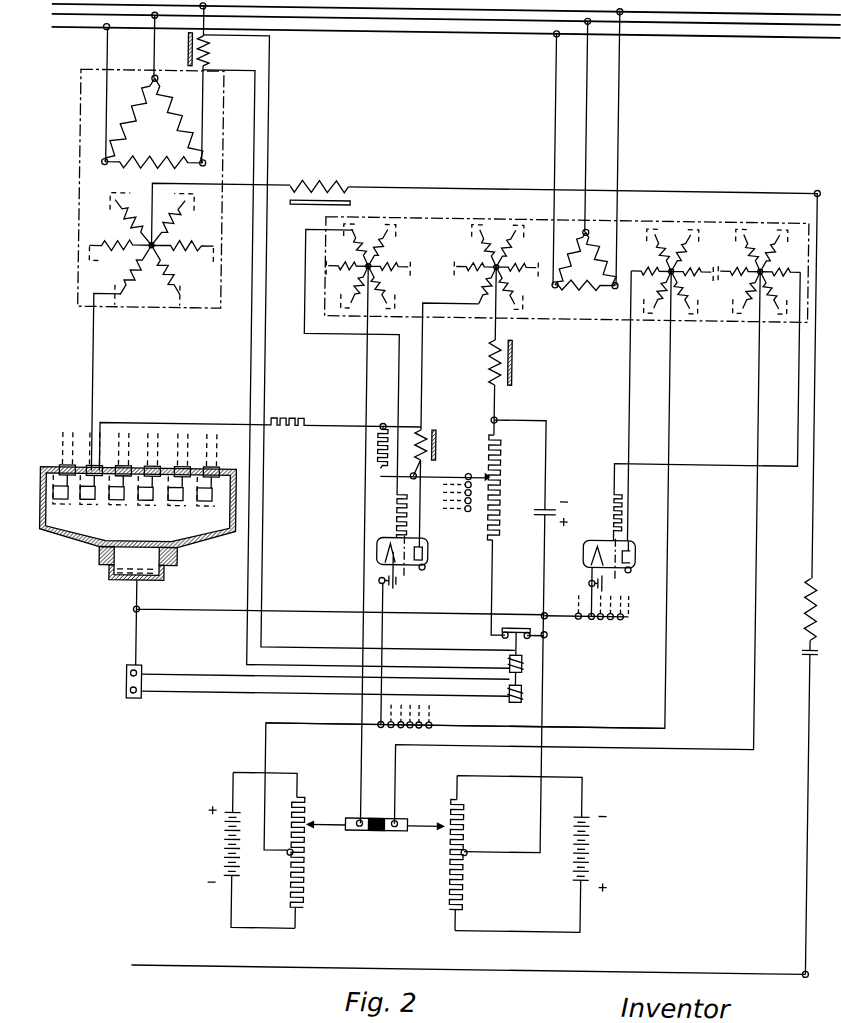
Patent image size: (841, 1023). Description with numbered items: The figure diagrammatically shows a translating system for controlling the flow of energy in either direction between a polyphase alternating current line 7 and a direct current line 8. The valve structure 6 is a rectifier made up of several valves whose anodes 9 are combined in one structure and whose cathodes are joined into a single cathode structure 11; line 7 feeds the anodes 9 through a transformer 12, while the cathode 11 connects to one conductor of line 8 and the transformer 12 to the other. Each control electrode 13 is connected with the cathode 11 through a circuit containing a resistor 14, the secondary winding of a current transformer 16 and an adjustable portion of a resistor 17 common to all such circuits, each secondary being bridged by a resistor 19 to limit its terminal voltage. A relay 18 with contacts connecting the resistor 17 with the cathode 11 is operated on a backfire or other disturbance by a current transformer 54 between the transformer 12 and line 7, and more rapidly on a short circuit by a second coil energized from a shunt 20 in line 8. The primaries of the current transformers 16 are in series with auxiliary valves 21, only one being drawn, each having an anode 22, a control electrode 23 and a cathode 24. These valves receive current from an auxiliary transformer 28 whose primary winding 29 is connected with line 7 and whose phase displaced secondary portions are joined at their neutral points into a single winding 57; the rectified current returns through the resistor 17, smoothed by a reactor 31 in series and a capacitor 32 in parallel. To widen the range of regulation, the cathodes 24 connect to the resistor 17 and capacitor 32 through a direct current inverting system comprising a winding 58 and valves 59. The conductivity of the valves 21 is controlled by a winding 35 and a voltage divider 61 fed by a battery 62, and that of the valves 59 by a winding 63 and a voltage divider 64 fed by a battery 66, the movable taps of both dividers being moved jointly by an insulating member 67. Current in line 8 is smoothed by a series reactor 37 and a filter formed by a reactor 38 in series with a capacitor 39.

The valve structure 6 is at (138, 519).
The line 7 is at (467, 10).
The line 8 is at (685, 971).
The anodes 9 is at (84, 504).
The cathode structure 11 is at (133, 583).
The transformer 12 is at (158, 315).
The control electrodes 13 is at (94, 506).
The resistor 14 is at (285, 415).
The current transformer 16 is at (437, 451).
The resistor 17 is at (512, 470).
The relay 18 is at (530, 669).
The resistor 19 is at (377, 452).
The shunt 20 is at (128, 679).
The auxiliary valve 21 is at (415, 539).
The anode 22 is at (424, 547).
The control electrode 23 is at (405, 566).
The cathode 24 is at (390, 543).
The auxiliary transformer 28 is at (539, 319).
The primary winding 29 is at (595, 289).
The reactor 31 is at (512, 376).
The capacitor 32 is at (540, 518).
The winding 35 is at (398, 262).
The reactor 37 is at (315, 178).
The reactor 38 is at (808, 596).
The capacitor 39 is at (805, 649).
The current transformer 54 is at (186, 58).
The winding 57 is at (515, 262).
The winding 58 is at (680, 238).
The valve 59 is at (632, 542).
The voltage divider 61 is at (325, 870).
The battery 62 is at (226, 845).
The winding 63 is at (745, 289).
The voltage divider 64 is at (455, 880).
The battery 66 is at (610, 862).
The insulating member 67 is at (385, 832).